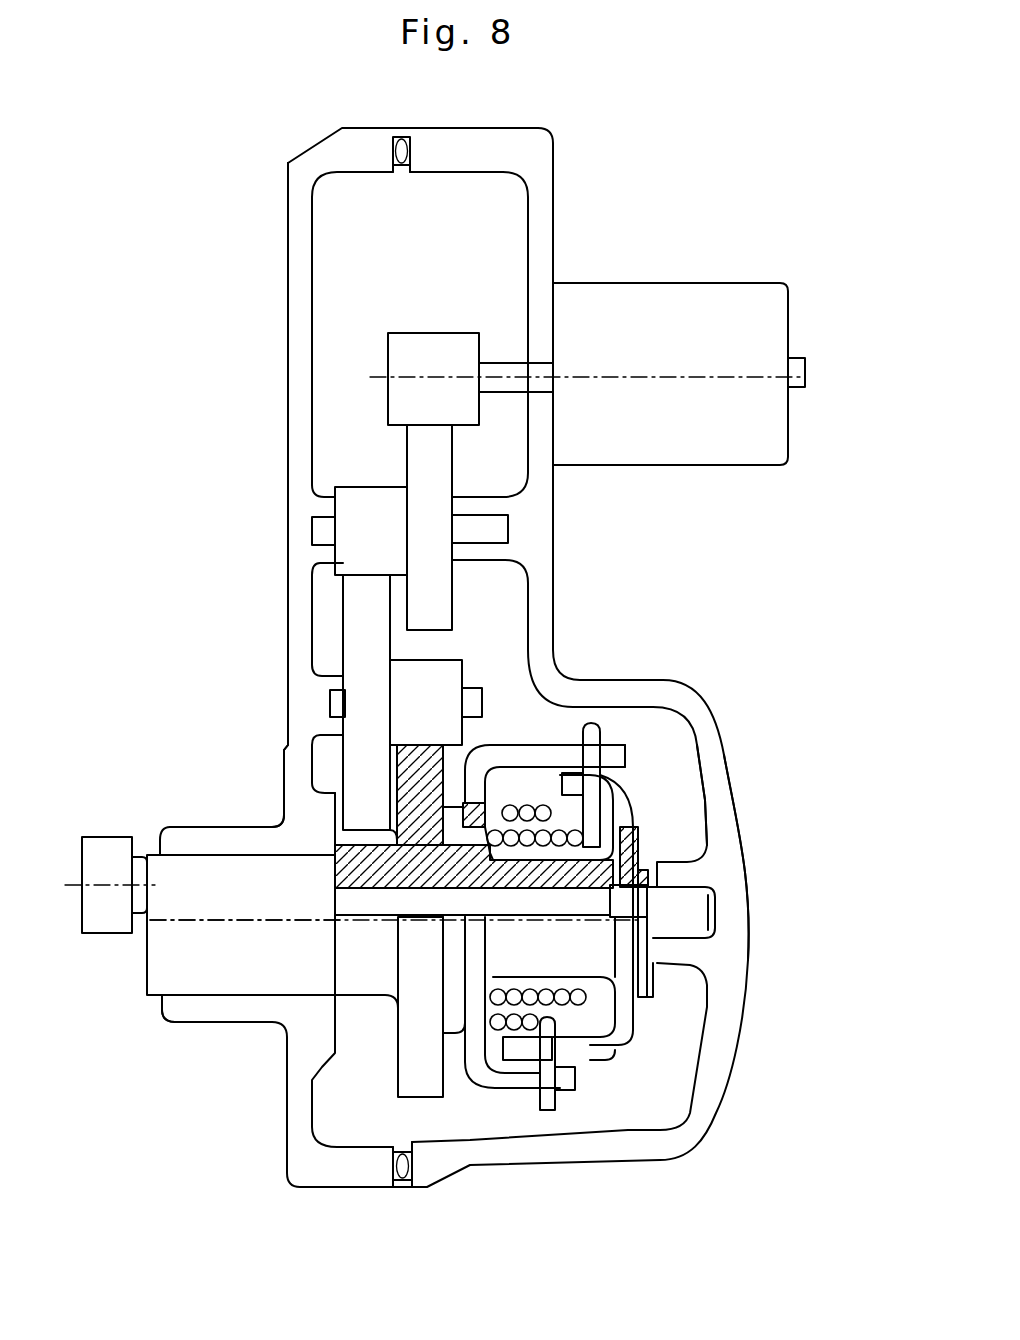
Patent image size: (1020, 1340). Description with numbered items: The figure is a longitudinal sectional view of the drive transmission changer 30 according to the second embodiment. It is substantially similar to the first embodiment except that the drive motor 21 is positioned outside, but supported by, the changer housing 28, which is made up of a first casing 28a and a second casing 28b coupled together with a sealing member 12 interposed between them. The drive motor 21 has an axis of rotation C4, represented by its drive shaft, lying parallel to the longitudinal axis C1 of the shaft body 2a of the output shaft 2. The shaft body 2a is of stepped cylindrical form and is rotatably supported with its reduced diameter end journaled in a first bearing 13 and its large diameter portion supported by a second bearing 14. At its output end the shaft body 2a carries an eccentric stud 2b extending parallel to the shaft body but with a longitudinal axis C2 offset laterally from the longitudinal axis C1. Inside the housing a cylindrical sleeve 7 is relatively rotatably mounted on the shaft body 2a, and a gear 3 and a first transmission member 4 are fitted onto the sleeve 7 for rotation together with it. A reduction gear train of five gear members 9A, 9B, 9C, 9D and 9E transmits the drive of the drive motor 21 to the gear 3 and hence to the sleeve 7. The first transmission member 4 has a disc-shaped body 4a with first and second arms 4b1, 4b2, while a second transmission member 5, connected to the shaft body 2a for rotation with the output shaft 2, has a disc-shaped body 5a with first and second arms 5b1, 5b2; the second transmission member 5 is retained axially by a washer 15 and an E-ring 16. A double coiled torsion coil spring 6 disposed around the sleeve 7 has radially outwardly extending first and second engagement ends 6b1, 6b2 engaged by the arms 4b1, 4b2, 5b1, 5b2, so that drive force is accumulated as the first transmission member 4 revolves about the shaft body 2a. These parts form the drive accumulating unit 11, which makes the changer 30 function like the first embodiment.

The output shaft 2 is at (202, 1001).
The shaft body 2a is at (255, 995).
The eccentric stud 2b is at (110, 837).
The gear 3 is at (398, 1075).
The first transmission member 4 is at (485, 1100).
The disc-shaped body 4a is at (457, 1048).
The first arm 4b1 is at (625, 735).
The second arm 4b2 is at (578, 1090).
The second transmission member 5 is at (633, 1049).
The disc-shaped body 5a is at (640, 1013).
The first arm 5b1 is at (572, 772).
The second arm 5b2 is at (522, 1062).
The torsion coil spring 6 is at (580, 1002).
The first engagement end 6b1 is at (604, 735).
The second engagement end 6b2 is at (553, 1112).
The cylindrical sleeve 7 is at (390, 1000).
The gear member 9A is at (410, 333).
The gear member 9B is at (407, 452).
The gear member 9C is at (360, 487).
The gear member 9D is at (343, 625).
The gear member 9E is at (458, 658).
The drive accumulating unit 11 is at (690, 814).
The sealing member 12 is at (400, 138).
The first bearing 13 is at (653, 892).
The second bearing 14 is at (232, 868).
The washer 15 is at (641, 830).
The E-ring 16 is at (716, 930).
The drive motor 21 is at (697, 283).
The changer housing 28 is at (396, 1192).
The first casing 28a is at (724, 772).
The second casing 28b is at (288, 770).
The drive transmission changer 30 is at (168, 616).
The longitudinal axis C1 is at (172, 935).
The longitudinal axis C2 is at (65, 885).
The axis of rotation C4 is at (610, 375).